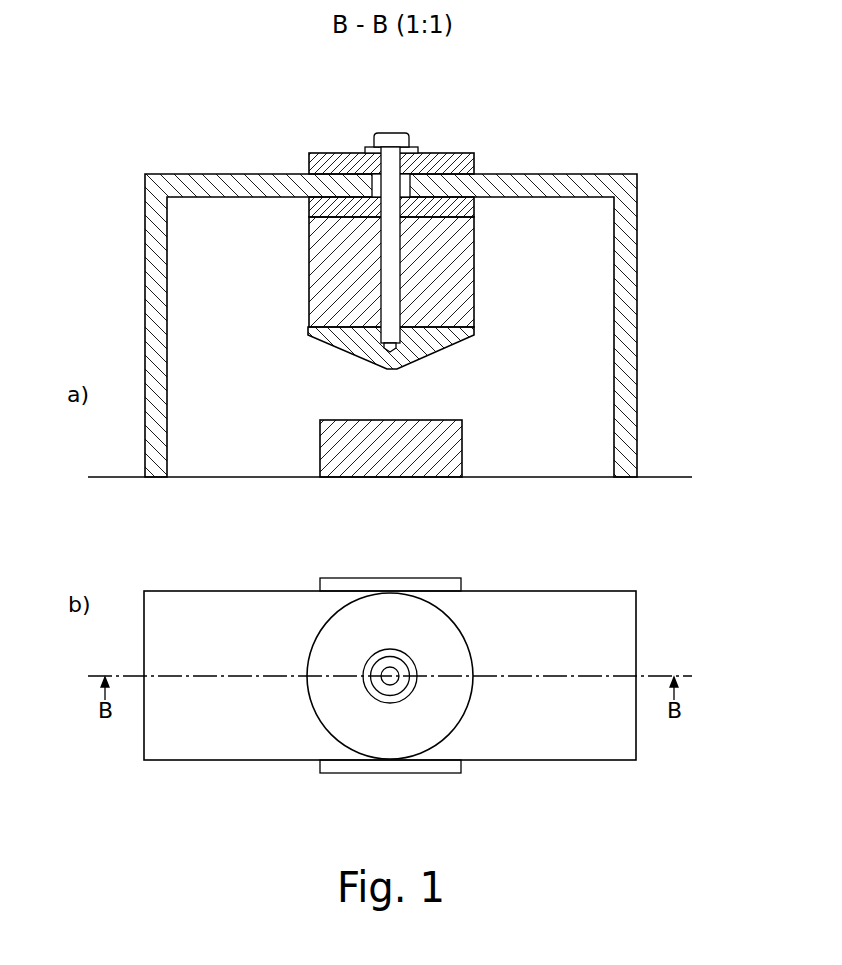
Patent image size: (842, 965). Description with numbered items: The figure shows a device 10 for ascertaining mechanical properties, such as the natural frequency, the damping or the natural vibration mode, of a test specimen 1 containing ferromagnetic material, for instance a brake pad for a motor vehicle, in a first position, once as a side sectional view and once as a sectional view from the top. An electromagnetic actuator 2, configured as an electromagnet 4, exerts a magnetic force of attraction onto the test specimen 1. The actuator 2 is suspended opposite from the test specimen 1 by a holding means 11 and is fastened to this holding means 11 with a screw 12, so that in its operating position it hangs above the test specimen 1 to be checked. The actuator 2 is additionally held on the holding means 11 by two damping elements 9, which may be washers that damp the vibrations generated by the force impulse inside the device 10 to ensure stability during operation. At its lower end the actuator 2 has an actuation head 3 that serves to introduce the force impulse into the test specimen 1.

The test specimen 1 is at (440, 436).
The electromagnetic actuator 2 is at (437, 258).
The actuation head 3 is at (436, 341).
The electromagnet 4 is at (483, 448).
The damping element 9 is at (455, 210).
The device 10 is at (187, 158).
The holding means 11 is at (615, 230).
The screw 12 is at (390, 132).